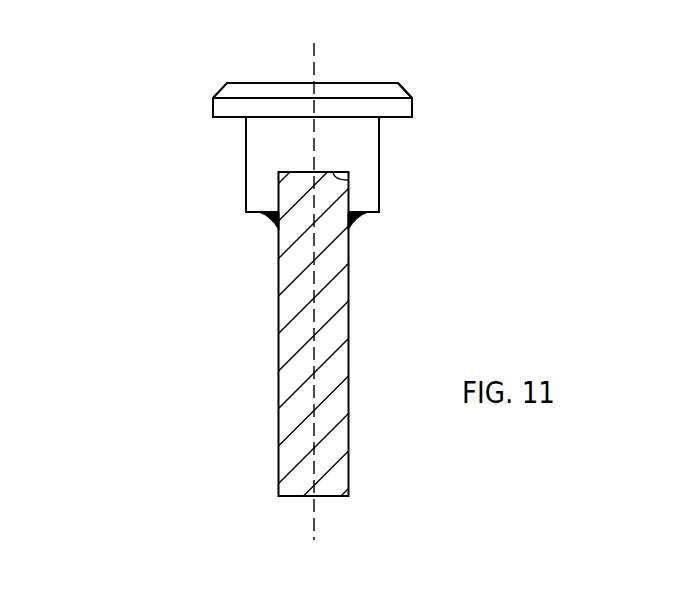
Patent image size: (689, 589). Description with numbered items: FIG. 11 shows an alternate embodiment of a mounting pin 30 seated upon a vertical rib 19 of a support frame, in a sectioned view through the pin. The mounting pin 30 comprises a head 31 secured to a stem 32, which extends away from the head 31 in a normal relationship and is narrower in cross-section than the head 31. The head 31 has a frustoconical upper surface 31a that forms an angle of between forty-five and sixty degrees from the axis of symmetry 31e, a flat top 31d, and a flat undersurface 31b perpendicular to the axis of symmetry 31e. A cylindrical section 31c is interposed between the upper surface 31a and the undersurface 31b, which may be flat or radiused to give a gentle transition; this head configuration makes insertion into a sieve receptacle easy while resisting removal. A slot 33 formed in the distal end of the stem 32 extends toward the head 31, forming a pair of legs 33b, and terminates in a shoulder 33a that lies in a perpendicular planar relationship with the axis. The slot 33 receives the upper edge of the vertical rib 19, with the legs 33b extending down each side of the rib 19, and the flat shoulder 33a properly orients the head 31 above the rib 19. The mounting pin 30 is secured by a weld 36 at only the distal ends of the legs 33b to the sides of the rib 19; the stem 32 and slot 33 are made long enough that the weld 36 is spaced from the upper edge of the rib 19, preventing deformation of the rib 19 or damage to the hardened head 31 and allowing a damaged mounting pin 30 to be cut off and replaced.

The mounting pin 30 is at (145, 96).
The head 31 is at (222, 95).
The frustoconical upper surface 31a is at (399, 86).
The undersurface 31b is at (227, 120).
The cylindrical section 31c is at (412, 100).
The top 31d is at (248, 83).
The axis of symmetry 31e is at (313, 50).
The stem 32 is at (380, 137).
The slot 33 is at (278, 202).
The shoulder 33a is at (348, 180).
The legs 33b is at (243, 207).
The weld 36 is at (272, 222).
The vertical rib 19 is at (280, 392).